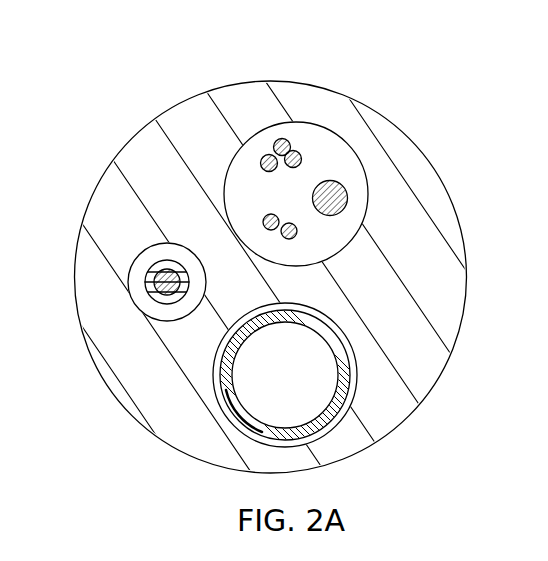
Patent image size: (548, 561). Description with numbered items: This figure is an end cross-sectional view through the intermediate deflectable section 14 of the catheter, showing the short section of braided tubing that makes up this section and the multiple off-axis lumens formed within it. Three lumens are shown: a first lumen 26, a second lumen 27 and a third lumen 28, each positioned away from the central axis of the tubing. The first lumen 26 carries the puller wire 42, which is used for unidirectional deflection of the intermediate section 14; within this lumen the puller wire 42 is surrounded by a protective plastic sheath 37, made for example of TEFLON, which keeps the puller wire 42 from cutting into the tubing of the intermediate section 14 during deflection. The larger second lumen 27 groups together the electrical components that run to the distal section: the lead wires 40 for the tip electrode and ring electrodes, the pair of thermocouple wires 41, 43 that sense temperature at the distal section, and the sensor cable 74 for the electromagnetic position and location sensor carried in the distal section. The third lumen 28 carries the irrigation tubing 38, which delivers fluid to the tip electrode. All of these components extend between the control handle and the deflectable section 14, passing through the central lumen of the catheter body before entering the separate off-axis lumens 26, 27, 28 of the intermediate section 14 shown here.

The intermediate deflectable section 14 is at (480, 236).
The second lumen 27 is at (330, 126).
The lead wires 40 is at (267, 155).
The thermocouple wire 43 is at (263, 222).
The thermocouple wire 41 is at (285, 239).
The sensor cable 74 is at (348, 199).
The first lumen 26 is at (148, 247).
The puller wire 42 is at (150, 301).
The protective plastic sheath 37 is at (146, 283).
The third lumen 28 is at (357, 378).
The irrigation tubing 38 is at (334, 336).